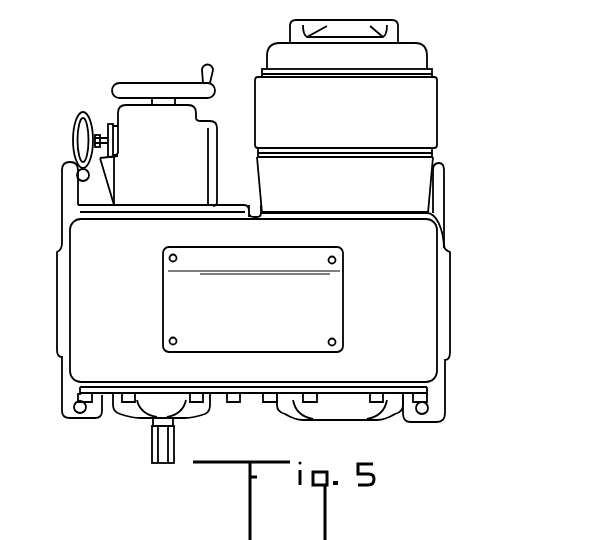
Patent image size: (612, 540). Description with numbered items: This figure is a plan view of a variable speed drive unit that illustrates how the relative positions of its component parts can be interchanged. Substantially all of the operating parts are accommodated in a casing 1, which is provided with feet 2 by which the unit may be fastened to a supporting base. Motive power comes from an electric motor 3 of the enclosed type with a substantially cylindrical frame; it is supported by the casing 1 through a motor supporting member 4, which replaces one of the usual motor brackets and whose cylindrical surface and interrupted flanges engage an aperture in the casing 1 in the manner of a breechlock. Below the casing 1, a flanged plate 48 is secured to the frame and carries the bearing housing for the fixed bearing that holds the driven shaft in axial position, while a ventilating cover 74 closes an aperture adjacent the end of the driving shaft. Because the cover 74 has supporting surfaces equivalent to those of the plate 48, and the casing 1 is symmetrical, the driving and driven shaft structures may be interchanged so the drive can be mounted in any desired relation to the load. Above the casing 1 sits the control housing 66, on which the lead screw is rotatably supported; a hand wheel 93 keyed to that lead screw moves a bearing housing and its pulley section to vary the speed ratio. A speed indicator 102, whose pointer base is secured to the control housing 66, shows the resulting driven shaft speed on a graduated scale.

The casing 1 is at (433, 303).
The feet 2 is at (68, 178).
The electric motor 3 is at (427, 103).
The motor supporting member 4 is at (425, 183).
The flanged plate 48 is at (140, 402).
The control housing 66 is at (133, 128).
The ventilating cover 74 is at (380, 415).
The hand wheel 93 is at (117, 83).
The speed indicator 102 is at (72, 133).